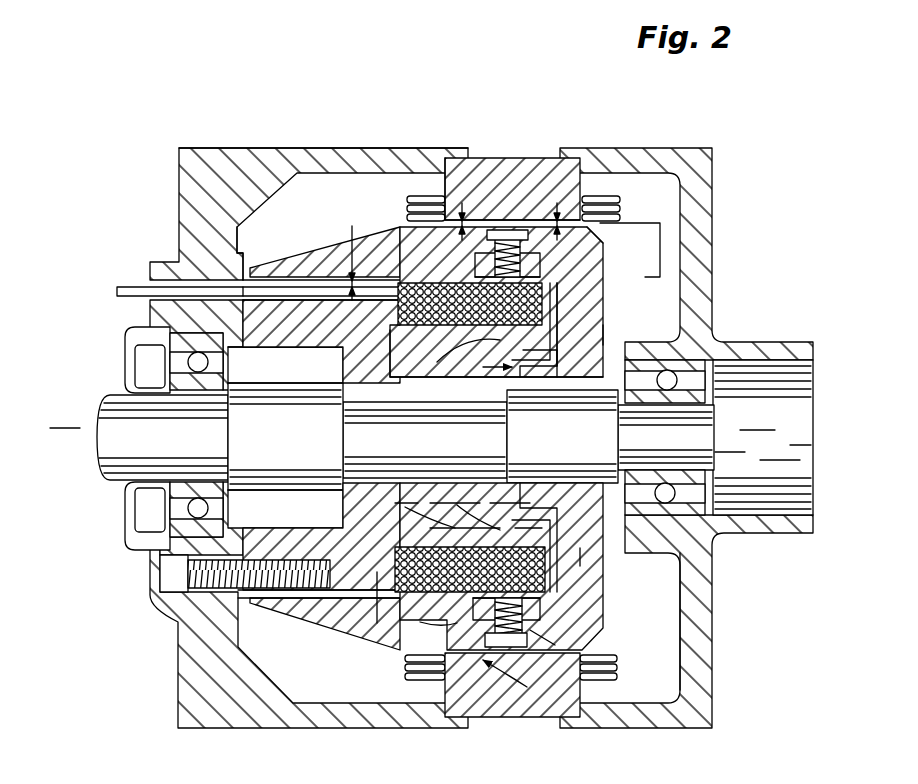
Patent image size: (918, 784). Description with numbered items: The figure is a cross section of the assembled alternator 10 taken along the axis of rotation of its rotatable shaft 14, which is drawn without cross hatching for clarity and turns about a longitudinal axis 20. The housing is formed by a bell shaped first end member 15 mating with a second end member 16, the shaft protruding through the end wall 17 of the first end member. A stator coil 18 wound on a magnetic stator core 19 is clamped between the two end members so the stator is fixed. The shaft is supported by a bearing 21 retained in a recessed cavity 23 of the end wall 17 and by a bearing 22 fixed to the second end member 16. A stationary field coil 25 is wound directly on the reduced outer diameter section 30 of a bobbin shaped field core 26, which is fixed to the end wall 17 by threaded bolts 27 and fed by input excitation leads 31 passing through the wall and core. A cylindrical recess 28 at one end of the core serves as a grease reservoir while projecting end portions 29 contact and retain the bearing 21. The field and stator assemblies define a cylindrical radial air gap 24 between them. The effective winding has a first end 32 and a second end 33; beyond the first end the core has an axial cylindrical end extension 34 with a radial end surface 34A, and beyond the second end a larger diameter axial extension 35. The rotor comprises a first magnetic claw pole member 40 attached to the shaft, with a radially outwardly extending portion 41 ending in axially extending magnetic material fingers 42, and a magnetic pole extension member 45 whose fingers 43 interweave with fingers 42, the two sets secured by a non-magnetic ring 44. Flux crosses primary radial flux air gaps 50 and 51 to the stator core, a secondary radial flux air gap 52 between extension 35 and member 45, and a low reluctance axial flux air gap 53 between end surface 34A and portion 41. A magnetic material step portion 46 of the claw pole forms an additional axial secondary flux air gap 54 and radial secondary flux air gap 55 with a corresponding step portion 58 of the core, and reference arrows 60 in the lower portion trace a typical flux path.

The alternator 10 is at (222, 108).
The rotatable shaft 14 is at (105, 482).
The first end member 15 is at (297, 150).
The second end member 16 is at (678, 157).
The end wall 17 is at (180, 197).
The stator coil 18 is at (447, 188).
The stator core 19 is at (522, 178).
The longitudinal axis 20 is at (65, 414).
The bearing 21 is at (200, 327).
The bearing 22 is at (722, 343).
The recessed cavity 23 is at (147, 363).
The cylindrical radial air gap 24 is at (182, 226).
The field coil 25 is at (457, 295).
The field core 26 is at (345, 378).
The threaded bolts 27 is at (220, 592).
The cylindrical recess 28 is at (277, 342).
The projecting end portions 29 is at (285, 440).
The reduced outer diameter section 30 is at (378, 366).
The input excitation leads 31 is at (124, 290).
The first end 32 is at (547, 290).
The second end 33 is at (388, 318).
The axial cylindrical end extension 34 is at (550, 313).
The end surface 34A is at (550, 318).
The axial extension 35 is at (285, 362).
The first magnetic claw pole member 40 is at (597, 505).
The radially outwardly extending portion 41 is at (592, 283).
The magnetic material fingers 42 is at (578, 258).
The fingers 43 is at (410, 212).
The non-magnetic ring 44 is at (478, 262).
The magnetic pole extension member 45 is at (305, 262).
The magnetic material step portion 46 is at (520, 382).
The primary radial flux air gap 50 is at (555, 209).
The primary radial flux air gap 51 is at (462, 209).
The secondary radial flux air gap 52 is at (350, 250).
The axial flux air gap 53 is at (570, 333).
The axial secondary flux air gap 54 is at (484, 368).
The radial secondary flux air gap 55 is at (545, 363).
The step portion 58 is at (456, 359).
The reference arrows 60 is at (600, 535).